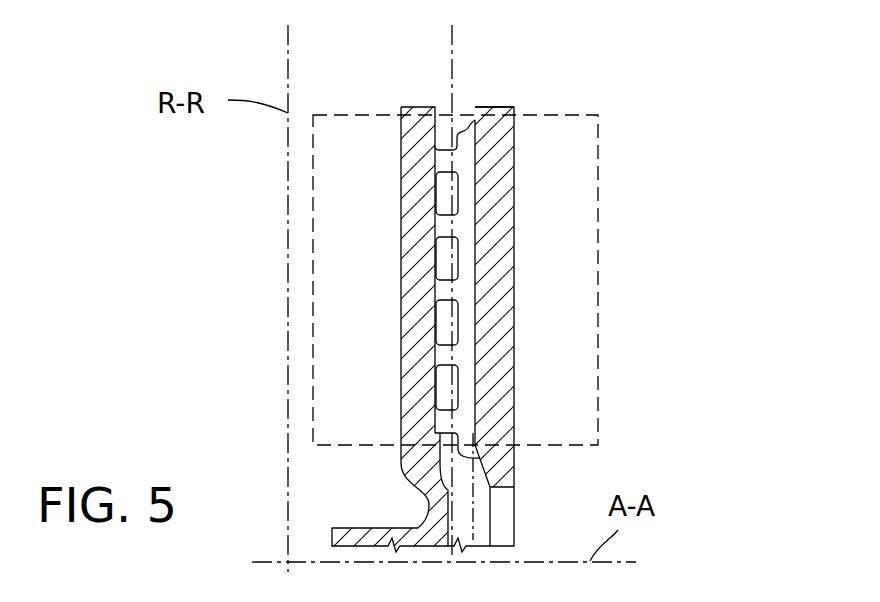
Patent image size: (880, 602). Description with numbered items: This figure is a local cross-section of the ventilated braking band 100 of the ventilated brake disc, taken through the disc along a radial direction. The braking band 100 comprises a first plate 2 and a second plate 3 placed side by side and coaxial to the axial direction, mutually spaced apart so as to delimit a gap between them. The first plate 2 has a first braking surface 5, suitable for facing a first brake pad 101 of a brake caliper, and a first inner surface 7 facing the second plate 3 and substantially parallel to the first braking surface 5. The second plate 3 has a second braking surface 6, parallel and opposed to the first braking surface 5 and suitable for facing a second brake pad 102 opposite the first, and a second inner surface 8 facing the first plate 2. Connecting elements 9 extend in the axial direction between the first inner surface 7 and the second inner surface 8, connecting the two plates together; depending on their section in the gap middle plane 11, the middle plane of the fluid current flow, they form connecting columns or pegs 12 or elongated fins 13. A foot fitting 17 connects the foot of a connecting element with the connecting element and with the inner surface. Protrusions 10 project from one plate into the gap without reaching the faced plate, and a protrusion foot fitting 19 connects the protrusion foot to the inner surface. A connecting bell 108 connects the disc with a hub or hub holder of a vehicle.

The first plate 2 is at (514, 298).
The second plate 3 is at (401, 328).
The first braking surface 5 is at (515, 180).
The second braking surface 6 is at (401, 185).
The first inner surface 7 is at (468, 124).
The second inner surface 8 is at (376, 69).
The connecting elements 9 is at (460, 241).
The protrusions 10 is at (458, 252).
The gap middle plane 11 is at (452, 47).
The connecting columns or pegs 12 is at (447, 128).
The fins 13 is at (463, 358).
The foot fitting 17 is at (437, 263).
The protrusion foot fitting 19 is at (514, 121).
The ventilated braking band 100 is at (500, 212).
The first brake pad 101 is at (603, 306).
The second brake pad 102 is at (343, 228).
The connecting bell 108 is at (350, 528).